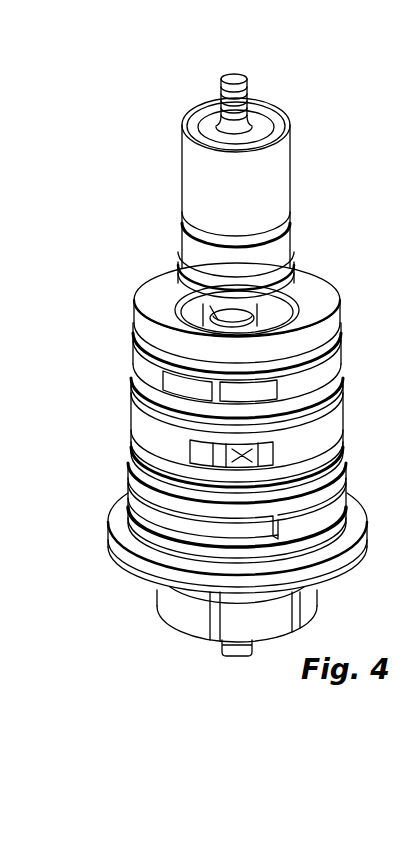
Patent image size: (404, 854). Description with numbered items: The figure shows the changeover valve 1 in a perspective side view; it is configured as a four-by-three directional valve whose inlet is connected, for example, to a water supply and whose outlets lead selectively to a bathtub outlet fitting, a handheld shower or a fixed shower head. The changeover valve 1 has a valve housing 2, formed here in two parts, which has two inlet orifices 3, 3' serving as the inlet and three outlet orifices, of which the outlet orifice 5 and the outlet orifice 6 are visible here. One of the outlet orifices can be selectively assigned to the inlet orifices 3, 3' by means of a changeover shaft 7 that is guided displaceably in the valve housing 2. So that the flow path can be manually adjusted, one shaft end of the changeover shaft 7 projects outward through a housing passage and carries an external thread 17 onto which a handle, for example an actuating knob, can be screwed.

The changeover valve 1 is at (341, 182).
The valve housing 2 is at (312, 290).
The inlet orifice 3 is at (143, 513).
The inlet orifice 3' is at (196, 363).
The outlet orifice 5 is at (145, 438).
The outlet orifice 6 is at (165, 307).
The changeover shaft 7 is at (238, 74).
The external thread 17 is at (258, 90).